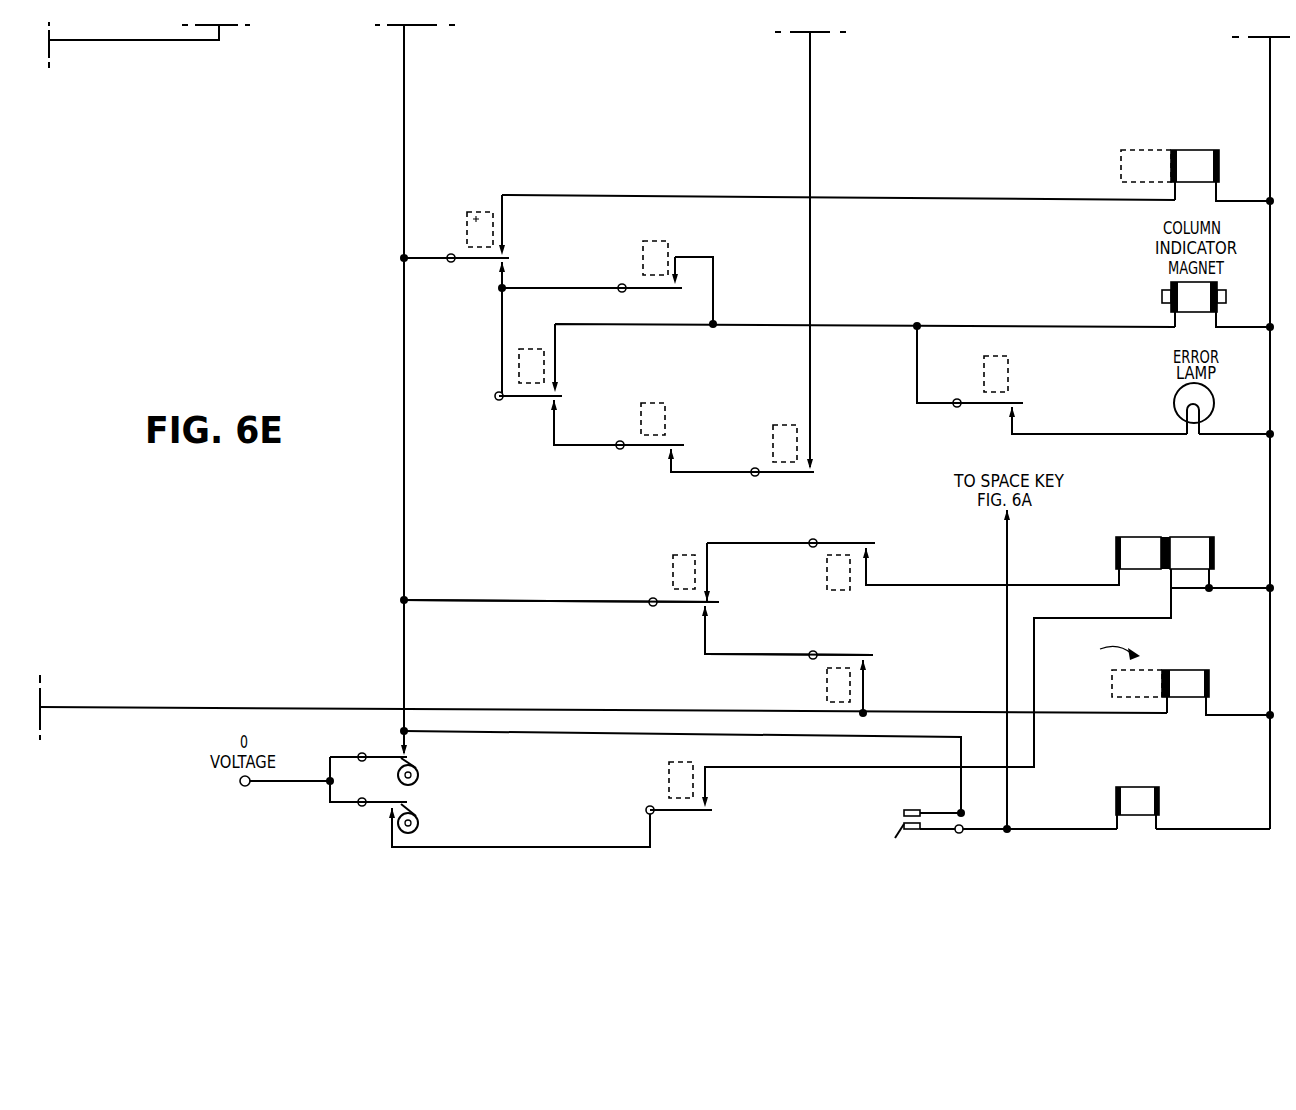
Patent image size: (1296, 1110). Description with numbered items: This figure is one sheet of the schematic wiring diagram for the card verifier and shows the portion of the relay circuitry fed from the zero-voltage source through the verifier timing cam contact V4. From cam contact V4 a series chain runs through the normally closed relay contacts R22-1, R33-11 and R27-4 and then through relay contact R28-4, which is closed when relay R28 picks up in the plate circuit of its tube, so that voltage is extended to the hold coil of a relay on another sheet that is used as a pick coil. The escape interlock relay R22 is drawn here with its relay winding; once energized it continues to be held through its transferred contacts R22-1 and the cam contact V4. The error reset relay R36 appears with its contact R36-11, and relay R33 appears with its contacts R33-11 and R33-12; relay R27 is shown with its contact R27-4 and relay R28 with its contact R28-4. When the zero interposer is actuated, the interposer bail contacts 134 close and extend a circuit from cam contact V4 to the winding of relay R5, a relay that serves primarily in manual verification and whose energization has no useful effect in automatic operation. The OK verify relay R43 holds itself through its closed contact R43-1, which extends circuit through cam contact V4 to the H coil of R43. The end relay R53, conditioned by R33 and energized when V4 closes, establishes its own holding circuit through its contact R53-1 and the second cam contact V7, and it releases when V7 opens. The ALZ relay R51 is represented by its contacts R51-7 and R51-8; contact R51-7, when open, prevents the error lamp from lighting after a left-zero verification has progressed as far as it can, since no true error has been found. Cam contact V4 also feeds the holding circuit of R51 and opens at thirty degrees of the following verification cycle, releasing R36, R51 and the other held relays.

The escape interlock relay R22 is at (1205, 150).
The relay contact R22-1 is at (494, 262).
The error reset relay R36 is at (643, 257).
The relay contact R36-11 is at (696, 302).
The relay R33 is at (531, 347).
The relay contact R33-11 is at (557, 388).
The relay R27 is at (641, 418).
The relay contact R27-4 is at (668, 446).
The relay R28 is at (773, 442).
The relay contact R28-4 is at (812, 474).
The ALZ relay R51 is at (1010, 370).
The relay contact R51-7 is at (1012, 403).
The relay contact R51-8 is at (875, 553).
The end relay R53 is at (1199, 537).
The relay contact R33-12 is at (712, 606).
The OK verify relay R43 is at (825, 685).
The relay contact R43-1 is at (874, 665).
The relay contact R53-1 is at (710, 804).
The interposer bail contacts 134 is at (902, 820).
The relay R5 is at (1145, 795).
The verifier timing cam contact V4 is at (387, 757).
The cam contact V7 is at (385, 811).